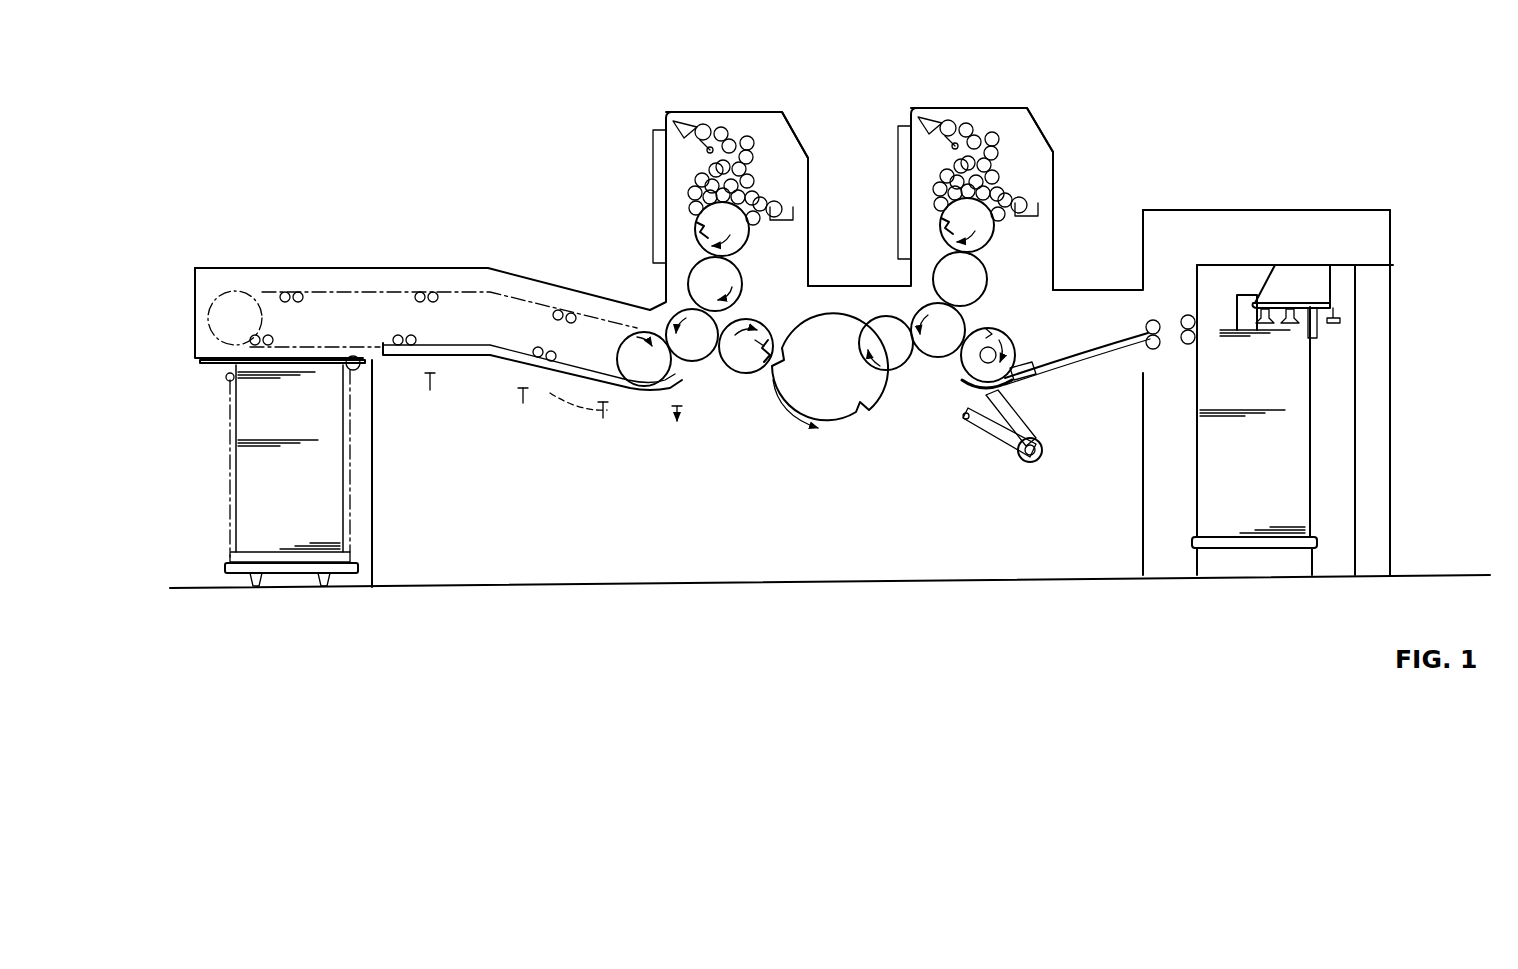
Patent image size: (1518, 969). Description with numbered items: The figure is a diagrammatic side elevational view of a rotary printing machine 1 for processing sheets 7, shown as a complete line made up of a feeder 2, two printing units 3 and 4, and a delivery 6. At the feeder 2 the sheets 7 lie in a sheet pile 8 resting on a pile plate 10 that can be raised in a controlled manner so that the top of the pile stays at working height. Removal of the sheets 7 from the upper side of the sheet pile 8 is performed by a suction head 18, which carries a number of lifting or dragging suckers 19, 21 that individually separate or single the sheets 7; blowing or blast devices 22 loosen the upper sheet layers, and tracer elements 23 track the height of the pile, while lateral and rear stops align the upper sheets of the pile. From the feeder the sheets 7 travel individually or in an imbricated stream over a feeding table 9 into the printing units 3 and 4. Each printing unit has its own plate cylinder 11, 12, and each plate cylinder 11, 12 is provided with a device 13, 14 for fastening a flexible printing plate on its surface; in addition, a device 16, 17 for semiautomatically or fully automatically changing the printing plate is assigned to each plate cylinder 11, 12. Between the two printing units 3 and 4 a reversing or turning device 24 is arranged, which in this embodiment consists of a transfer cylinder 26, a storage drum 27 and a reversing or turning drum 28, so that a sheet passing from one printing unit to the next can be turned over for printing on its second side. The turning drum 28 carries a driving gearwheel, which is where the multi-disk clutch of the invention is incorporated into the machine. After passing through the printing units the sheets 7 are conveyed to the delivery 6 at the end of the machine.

The printing machine 1 is at (1078, 128).
The feeder 2 is at (1311, 208).
The printing unit 3 is at (1012, 108).
The printing unit 4 is at (757, 114).
The delivery 6 is at (410, 245).
The sheets 7 is at (1250, 322).
The sheet pile 8 is at (1270, 486).
The feeding table 9 is at (1098, 357).
The pile plate 10 is at (1317, 541).
The plate cylinder 11 is at (977, 230).
The plate cylinder 12 is at (733, 237).
The device for fastening flexible printing plates 13 is at (945, 223).
The device for fastening flexible printing plates 14 is at (700, 229).
The device for changing a printing plate 16 is at (900, 152).
The device for changing a printing plate 17 is at (657, 160).
The suction head 18 is at (1307, 282).
The lifting or dragging sucker 19 is at (1333, 300).
The lifting or dragging sucker 21 is at (1277, 305).
The blowing device 22 is at (1017, 360).
The tracer element 23 is at (1033, 383).
The reversing or turning device 24 is at (778, 458).
The transfer cylinder 26 is at (895, 372).
The storage drum 27 is at (825, 418).
The reversing or turning drum 28 is at (742, 375).